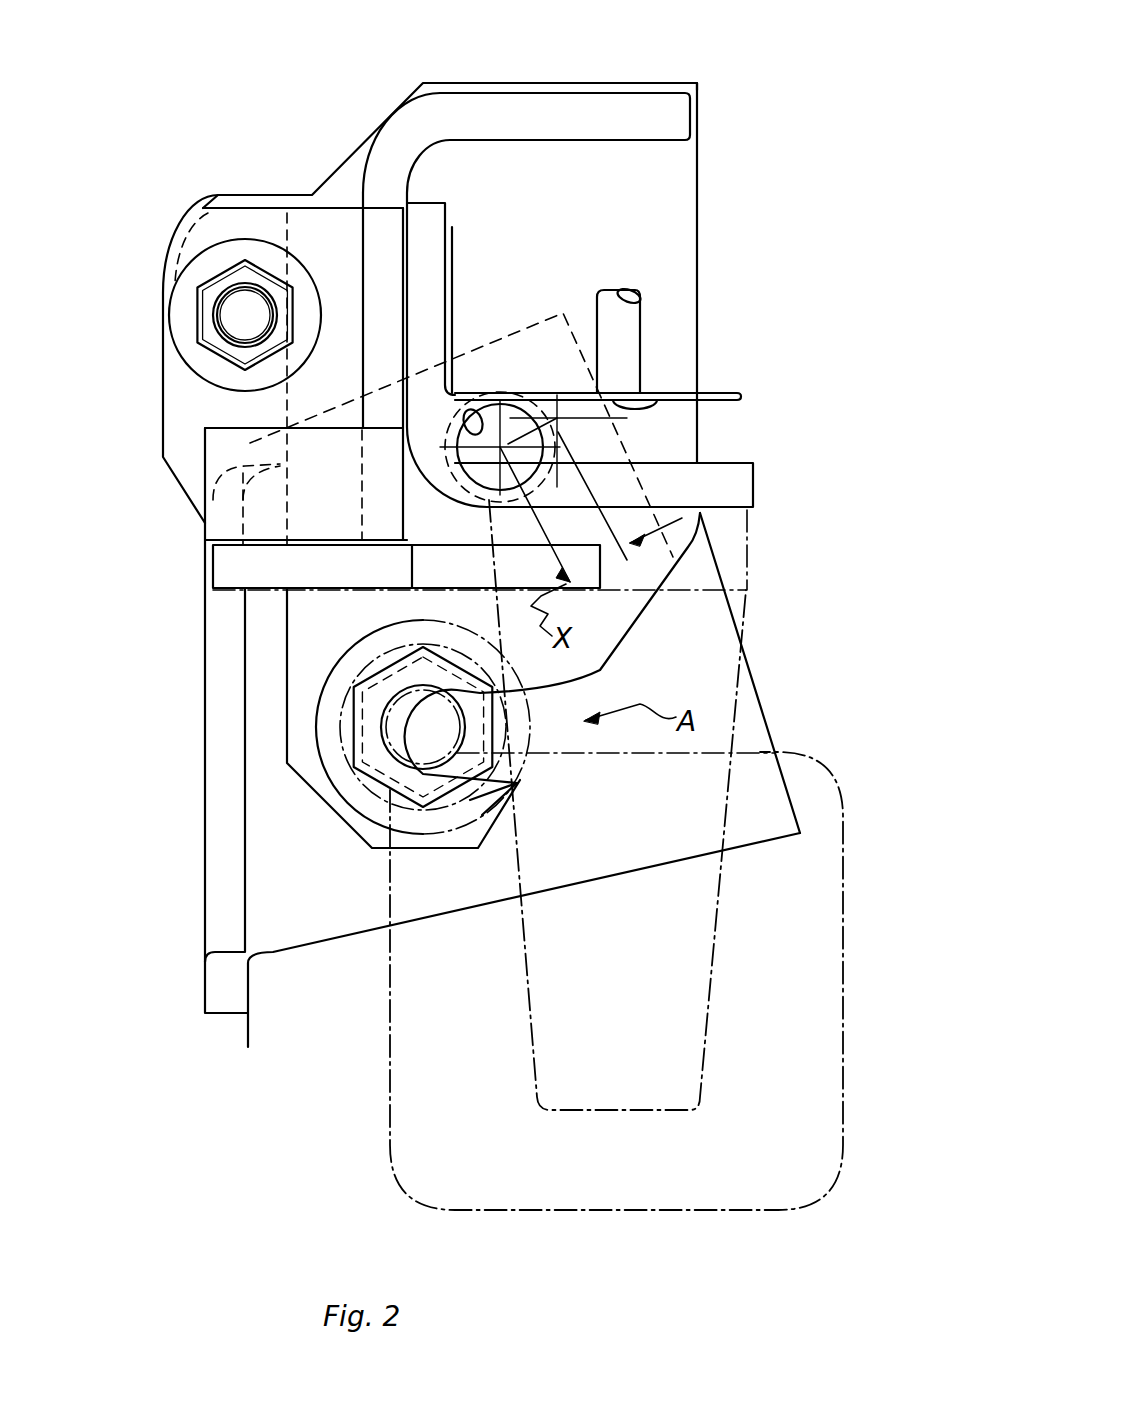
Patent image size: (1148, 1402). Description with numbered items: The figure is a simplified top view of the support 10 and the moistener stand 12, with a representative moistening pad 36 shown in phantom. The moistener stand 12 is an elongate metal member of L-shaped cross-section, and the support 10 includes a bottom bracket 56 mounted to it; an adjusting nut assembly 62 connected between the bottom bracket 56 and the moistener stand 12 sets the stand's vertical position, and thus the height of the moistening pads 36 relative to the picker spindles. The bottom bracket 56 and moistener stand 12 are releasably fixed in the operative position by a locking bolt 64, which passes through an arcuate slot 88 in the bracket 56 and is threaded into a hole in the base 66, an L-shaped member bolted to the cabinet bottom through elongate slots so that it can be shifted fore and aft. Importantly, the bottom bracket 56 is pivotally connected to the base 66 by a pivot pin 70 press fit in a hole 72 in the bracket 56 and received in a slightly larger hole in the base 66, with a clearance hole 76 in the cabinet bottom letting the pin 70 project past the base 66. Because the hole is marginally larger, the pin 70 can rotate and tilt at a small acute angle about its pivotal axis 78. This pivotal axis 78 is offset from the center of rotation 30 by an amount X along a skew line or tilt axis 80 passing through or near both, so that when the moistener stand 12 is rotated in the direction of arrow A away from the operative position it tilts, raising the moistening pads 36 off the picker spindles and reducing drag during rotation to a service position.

The support 10 is at (700, 82).
The moistener stand 12 is at (755, 483).
The center of rotation 30 is at (557, 418).
The moistening pads 36 is at (843, 1010).
The bottom bracket 56 is at (528, 93).
The adjusting nut assembly 62 is at (212, 348).
The locking bolt 64 is at (363, 767).
The base 66 is at (327, 940).
The pivot pin 70 is at (453, 418).
The hole 72 is at (480, 408).
The clearance hole 76 is at (528, 385).
The pivotal axis 78 is at (462, 493).
The tilt axis 80 is at (657, 397).
The arcuate slot 88 is at (520, 780).